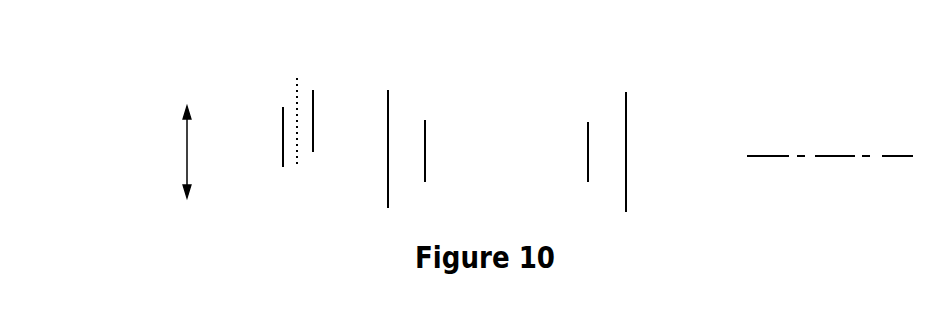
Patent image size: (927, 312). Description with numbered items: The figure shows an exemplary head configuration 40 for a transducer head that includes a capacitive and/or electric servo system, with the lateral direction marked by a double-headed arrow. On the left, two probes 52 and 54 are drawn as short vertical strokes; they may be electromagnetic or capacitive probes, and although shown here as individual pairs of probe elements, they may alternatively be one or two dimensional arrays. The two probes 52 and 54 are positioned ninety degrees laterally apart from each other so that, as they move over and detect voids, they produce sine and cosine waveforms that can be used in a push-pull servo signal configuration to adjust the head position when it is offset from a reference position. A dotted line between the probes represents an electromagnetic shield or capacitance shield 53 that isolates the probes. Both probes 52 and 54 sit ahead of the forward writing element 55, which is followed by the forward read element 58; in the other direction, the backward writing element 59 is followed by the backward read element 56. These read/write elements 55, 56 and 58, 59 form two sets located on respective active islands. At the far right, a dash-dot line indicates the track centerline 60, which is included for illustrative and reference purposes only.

The head configuration 40 is at (259, 132).
The probe 52 is at (283, 120).
The electromagnetic shield or capacitance shield 53 is at (297, 78).
The probe 54 is at (313, 122).
The forward writing element 55 is at (388, 118).
The backward read element 56 is at (425, 148).
The forward read element 58 is at (588, 135).
The backward writing element 59 is at (626, 103).
The track centerline 60 is at (828, 151).